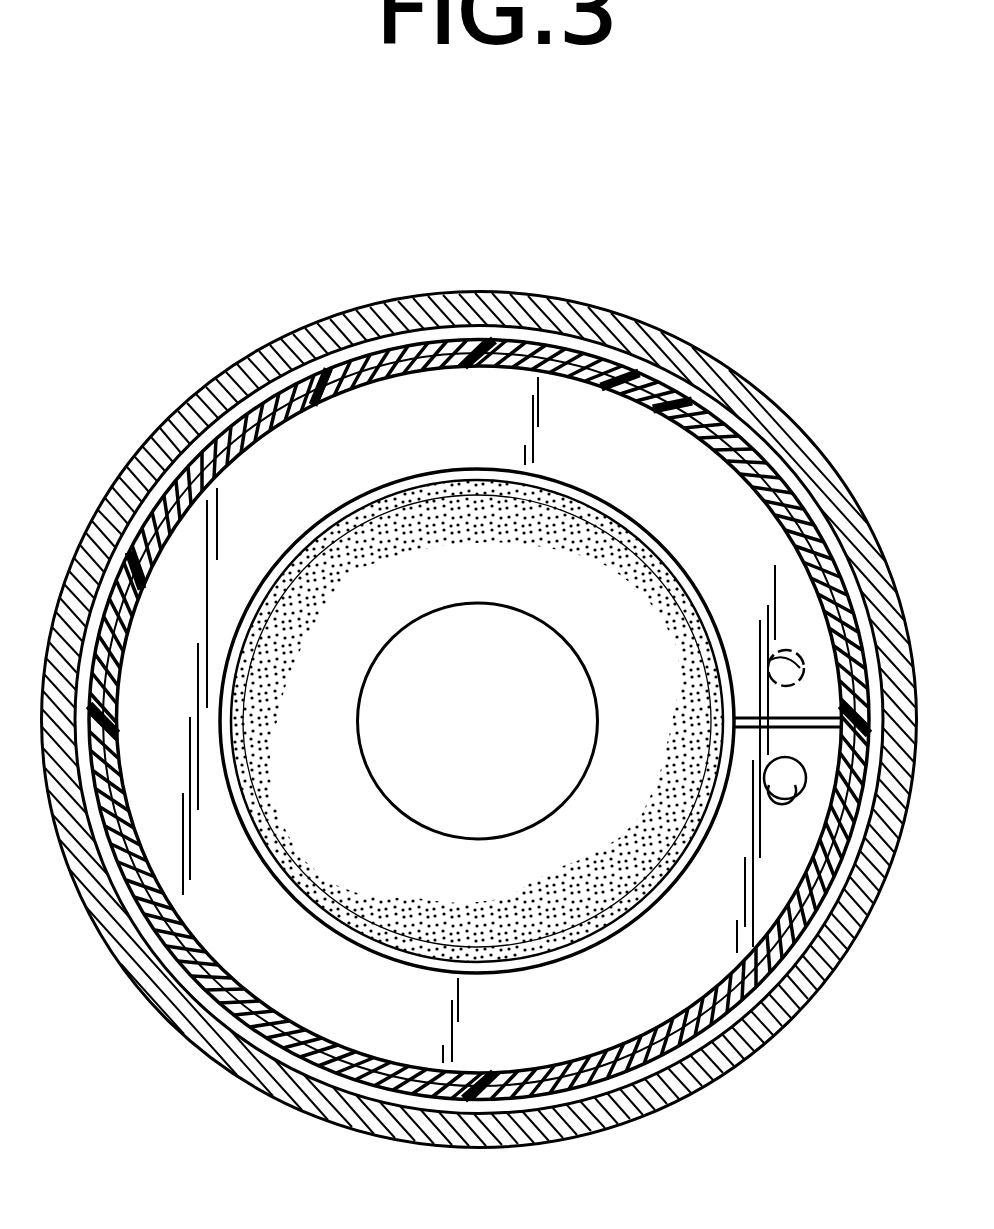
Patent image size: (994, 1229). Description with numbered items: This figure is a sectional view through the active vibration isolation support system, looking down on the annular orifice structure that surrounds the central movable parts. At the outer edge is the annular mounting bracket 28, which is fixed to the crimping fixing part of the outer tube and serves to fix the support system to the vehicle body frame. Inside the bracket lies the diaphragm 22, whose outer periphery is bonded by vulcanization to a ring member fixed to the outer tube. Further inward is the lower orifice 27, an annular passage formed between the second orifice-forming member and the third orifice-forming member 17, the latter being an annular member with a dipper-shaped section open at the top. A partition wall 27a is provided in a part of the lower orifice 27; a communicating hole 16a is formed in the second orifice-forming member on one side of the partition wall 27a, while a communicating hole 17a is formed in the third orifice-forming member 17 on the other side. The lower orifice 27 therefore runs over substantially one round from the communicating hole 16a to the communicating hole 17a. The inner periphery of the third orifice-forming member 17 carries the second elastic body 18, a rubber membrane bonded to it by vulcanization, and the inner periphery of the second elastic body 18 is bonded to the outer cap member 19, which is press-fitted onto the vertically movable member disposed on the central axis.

The mounting bracket 28 is at (704, 372).
The diaphragm 22 is at (297, 397).
The lower orifice 27 is at (447, 446).
The partition wall 27a is at (752, 713).
The second elastic body 18 is at (382, 862).
The third orifice-forming member 17 is at (477, 479).
The communicating hole 17a is at (765, 797).
The communicating hole 16a is at (771, 655).
The outer cap member 19 is at (508, 744).